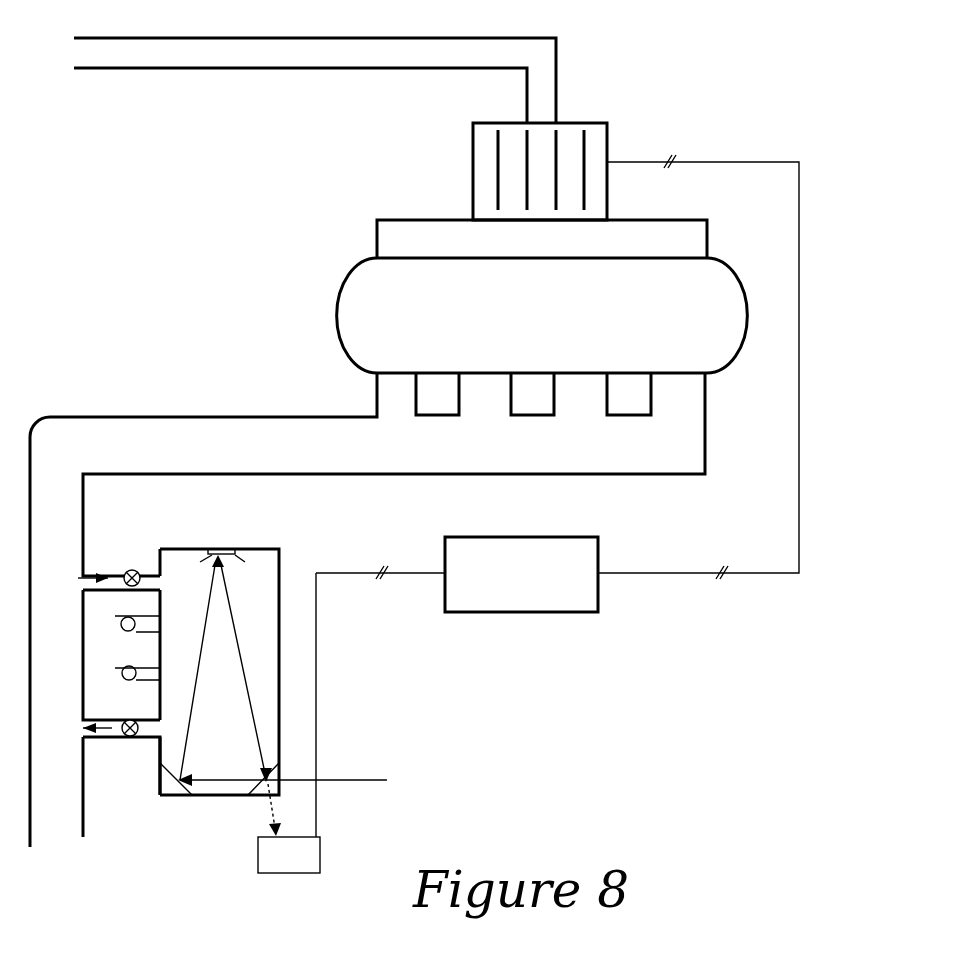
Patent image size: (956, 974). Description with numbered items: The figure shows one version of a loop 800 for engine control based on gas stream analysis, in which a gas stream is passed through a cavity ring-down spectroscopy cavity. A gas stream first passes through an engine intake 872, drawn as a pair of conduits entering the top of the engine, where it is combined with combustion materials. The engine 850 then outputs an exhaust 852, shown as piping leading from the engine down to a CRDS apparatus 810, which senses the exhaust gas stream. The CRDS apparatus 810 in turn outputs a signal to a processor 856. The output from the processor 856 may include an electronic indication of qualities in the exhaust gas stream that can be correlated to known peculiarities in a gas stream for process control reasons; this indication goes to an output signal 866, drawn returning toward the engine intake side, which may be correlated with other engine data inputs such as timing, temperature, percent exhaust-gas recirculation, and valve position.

The loop 800 is at (645, 52).
The engine intake 872 is at (188, 68).
The engine 850 is at (340, 275).
The output signal 866 is at (646, 162).
The exhaust 852 is at (188, 418).
The CRDS apparatus 810 is at (280, 550).
The processor 856 is at (548, 612).